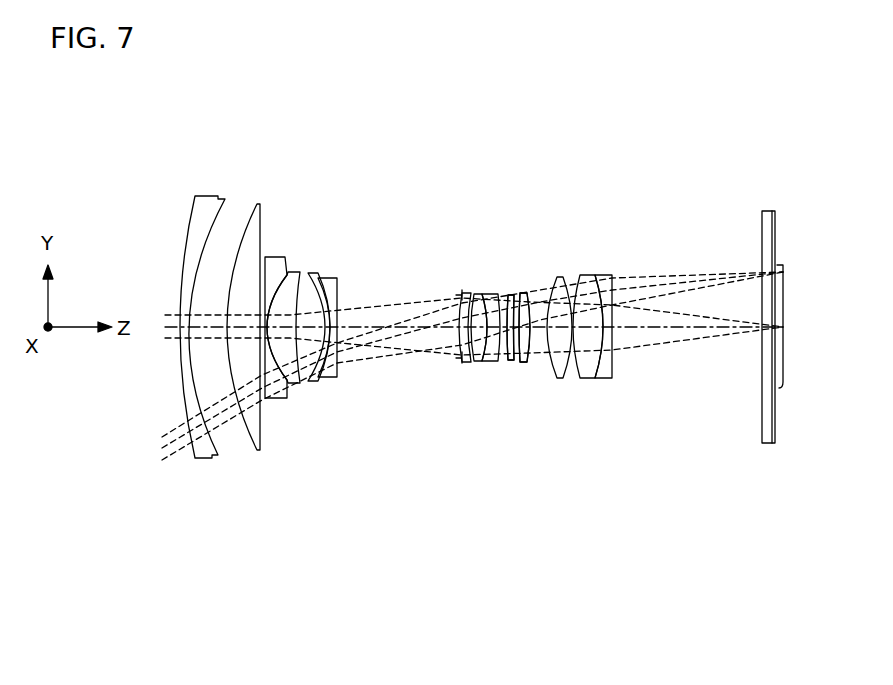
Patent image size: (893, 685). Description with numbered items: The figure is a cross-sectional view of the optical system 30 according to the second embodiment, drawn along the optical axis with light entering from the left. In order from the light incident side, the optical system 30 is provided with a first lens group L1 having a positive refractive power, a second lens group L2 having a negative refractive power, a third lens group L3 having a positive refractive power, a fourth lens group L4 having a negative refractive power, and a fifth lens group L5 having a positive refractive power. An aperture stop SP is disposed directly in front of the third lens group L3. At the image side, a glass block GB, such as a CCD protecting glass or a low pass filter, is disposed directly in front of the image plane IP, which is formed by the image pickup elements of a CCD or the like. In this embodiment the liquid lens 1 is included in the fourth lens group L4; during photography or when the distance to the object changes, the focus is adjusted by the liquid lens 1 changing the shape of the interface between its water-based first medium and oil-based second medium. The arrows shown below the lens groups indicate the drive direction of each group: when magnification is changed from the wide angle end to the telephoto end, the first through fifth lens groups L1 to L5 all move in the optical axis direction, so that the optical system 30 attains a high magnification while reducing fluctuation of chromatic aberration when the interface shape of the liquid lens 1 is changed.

The optical system 30 is at (666, 177).
The first lens group L1 is at (171, 626).
The second lens group L2 is at (306, 566).
The third lens group L3 is at (424, 565).
The fourth lens group L4 is at (453, 565).
The fifth lens group L5 is at (483, 564).
The liquid lens 1 is at (523, 370).
The aperture stop SP is at (460, 294).
The glass block GB is at (770, 445).
The image plane IP is at (782, 386).